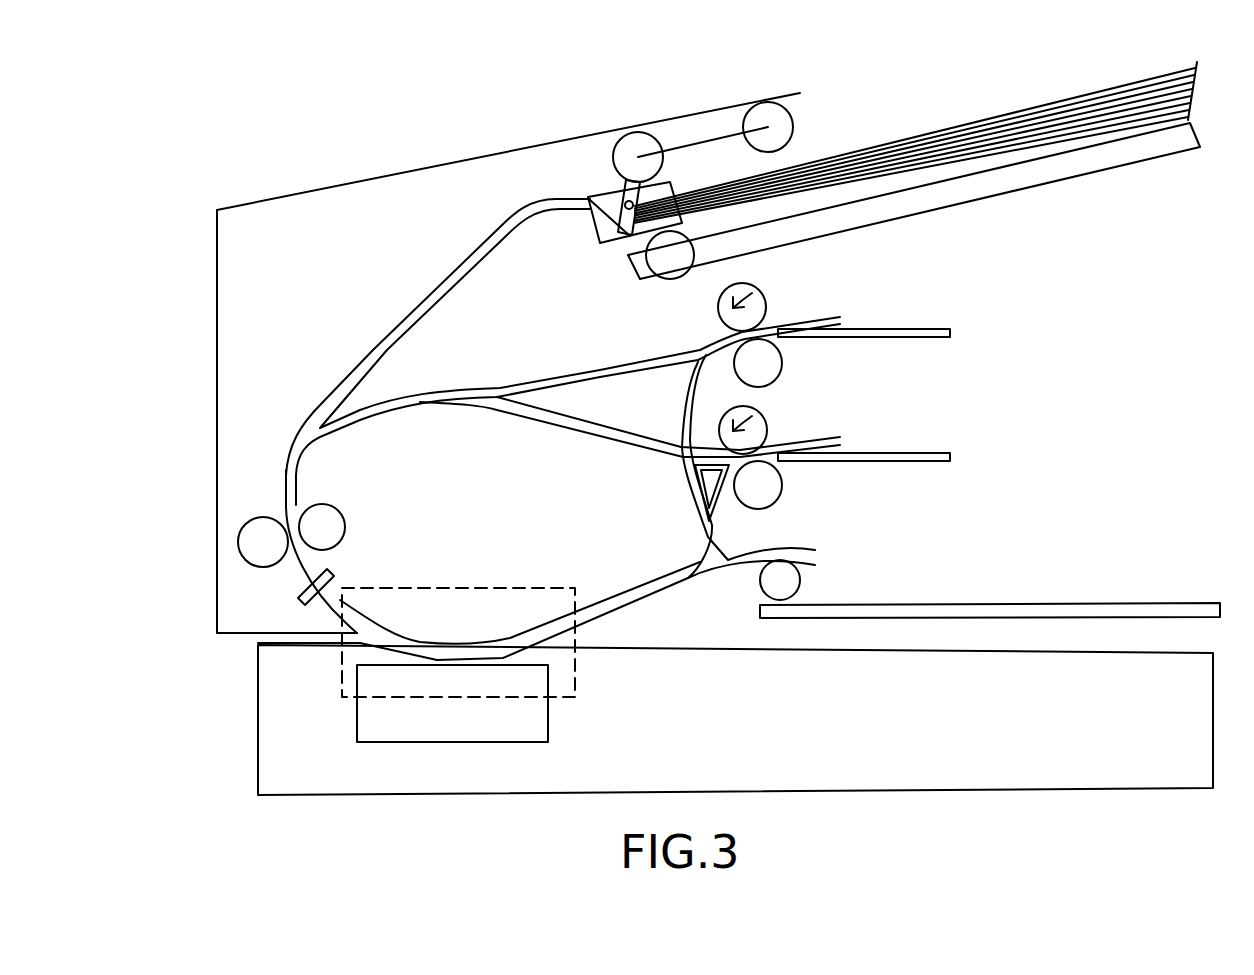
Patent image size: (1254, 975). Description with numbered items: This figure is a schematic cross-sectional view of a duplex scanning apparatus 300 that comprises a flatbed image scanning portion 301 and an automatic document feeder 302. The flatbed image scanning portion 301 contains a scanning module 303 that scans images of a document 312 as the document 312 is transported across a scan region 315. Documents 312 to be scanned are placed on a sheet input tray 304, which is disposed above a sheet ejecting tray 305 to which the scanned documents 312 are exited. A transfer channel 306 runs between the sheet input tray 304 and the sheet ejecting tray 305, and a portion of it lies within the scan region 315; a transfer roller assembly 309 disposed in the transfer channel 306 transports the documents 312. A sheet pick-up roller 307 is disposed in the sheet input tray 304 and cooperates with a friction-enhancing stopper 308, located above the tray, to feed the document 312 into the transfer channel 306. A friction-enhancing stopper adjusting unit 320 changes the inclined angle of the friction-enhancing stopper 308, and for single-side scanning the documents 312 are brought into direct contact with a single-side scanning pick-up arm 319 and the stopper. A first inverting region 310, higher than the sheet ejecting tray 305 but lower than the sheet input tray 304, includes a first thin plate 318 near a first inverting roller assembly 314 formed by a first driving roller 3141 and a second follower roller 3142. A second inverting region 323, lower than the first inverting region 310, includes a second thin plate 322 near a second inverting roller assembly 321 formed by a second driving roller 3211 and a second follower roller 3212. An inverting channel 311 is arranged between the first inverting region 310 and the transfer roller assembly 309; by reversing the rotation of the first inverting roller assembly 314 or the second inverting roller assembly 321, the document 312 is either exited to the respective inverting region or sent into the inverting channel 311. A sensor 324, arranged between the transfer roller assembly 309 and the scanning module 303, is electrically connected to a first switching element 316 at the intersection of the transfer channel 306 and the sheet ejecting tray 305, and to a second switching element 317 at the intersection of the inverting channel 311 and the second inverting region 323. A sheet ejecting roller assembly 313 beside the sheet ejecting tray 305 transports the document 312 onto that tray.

The duplex scanning apparatus 300 is at (170, 97).
The flatbed image scanning portion 301 is at (347, 772).
The automatic document feeder 302 is at (300, 194).
The scanning module 303 is at (497, 725).
The sheet input tray 304 is at (1163, 142).
The sheet ejecting tray 305 is at (1145, 607).
The transfer channel 306 is at (285, 477).
The sheet pick-up roller 307 is at (667, 267).
The friction-enhancing stopper 308 is at (600, 236).
The transfer roller assembly 309 is at (253, 540).
The first inverting region 310 is at (928, 305).
The inverting channel 311 is at (457, 388).
The document 312 is at (1053, 125).
The sheet ejecting roller assembly 313 is at (783, 582).
The first inverting roller assembly 314 is at (753, 303).
The first driving roller 3141 is at (758, 303).
The second follower roller 3142 is at (763, 366).
The scan region 315 is at (350, 675).
The first switching element 316 is at (703, 565).
The second switching element 317 is at (708, 473).
The first thin plate 318 is at (877, 333).
The single-side scanning pick-up arm 319 is at (783, 133).
The friction-enhancing stopper adjusting unit 320 is at (606, 203).
The second inverting roller assembly 321 is at (748, 425).
The second driving roller 3211 is at (760, 430).
The second follower roller 3212 is at (767, 480).
The second thin plate 322 is at (877, 457).
The second inverting region 323 is at (928, 428).
The sensor 324 is at (300, 592).